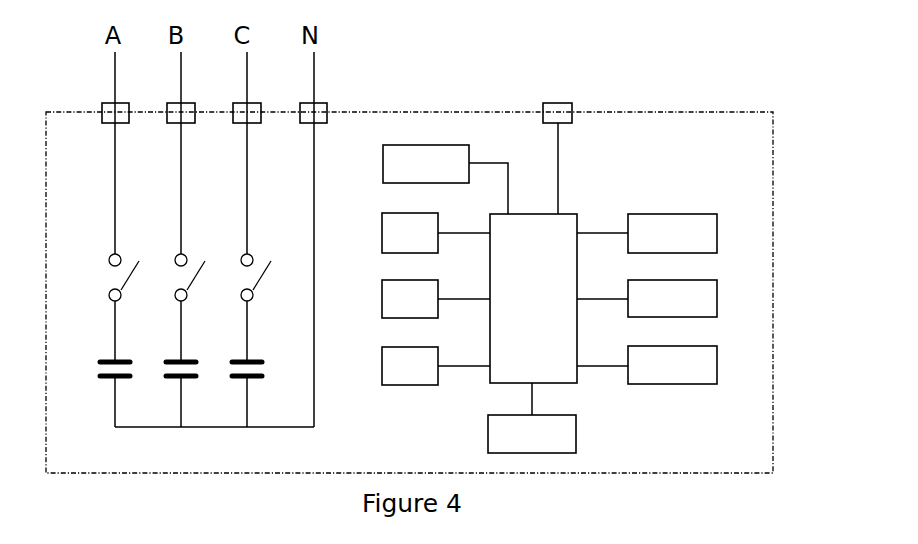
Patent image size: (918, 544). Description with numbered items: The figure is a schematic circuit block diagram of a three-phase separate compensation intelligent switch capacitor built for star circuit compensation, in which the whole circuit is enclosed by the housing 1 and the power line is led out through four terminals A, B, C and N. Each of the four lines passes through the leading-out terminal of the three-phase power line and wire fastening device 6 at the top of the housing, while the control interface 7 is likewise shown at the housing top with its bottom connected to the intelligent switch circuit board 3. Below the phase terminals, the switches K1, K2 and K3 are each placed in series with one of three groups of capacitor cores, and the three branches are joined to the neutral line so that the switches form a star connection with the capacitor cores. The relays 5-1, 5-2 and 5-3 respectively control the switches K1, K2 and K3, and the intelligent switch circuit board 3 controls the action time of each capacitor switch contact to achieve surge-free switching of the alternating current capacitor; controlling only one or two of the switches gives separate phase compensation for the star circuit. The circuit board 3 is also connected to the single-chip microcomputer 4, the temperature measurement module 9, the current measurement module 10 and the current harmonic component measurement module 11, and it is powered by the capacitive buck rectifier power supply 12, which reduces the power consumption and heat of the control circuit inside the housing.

The housing 1 is at (733, 74).
The intelligent switch circuit board 3 is at (533, 298).
The single-chip microcomputer 4 is at (532, 418).
The relay 5-1 is at (436, 233).
The relay 5-2 is at (436, 299).
The relay 5-3 is at (436, 366).
The leading-out terminal of three-phase power line and wire fastening device 6 is at (352, 73).
The control interface 7 is at (590, 74).
The temperature measurement module 9 is at (647, 233).
The current measurement module 10 is at (647, 298).
The current harmonic component measurement module 11 is at (647, 365).
The capacitive buck rectifier power supply 12 is at (445, 179).
The switch K1 is at (129, 261).
The switch K2 is at (195, 261).
The switch K3 is at (261, 261).